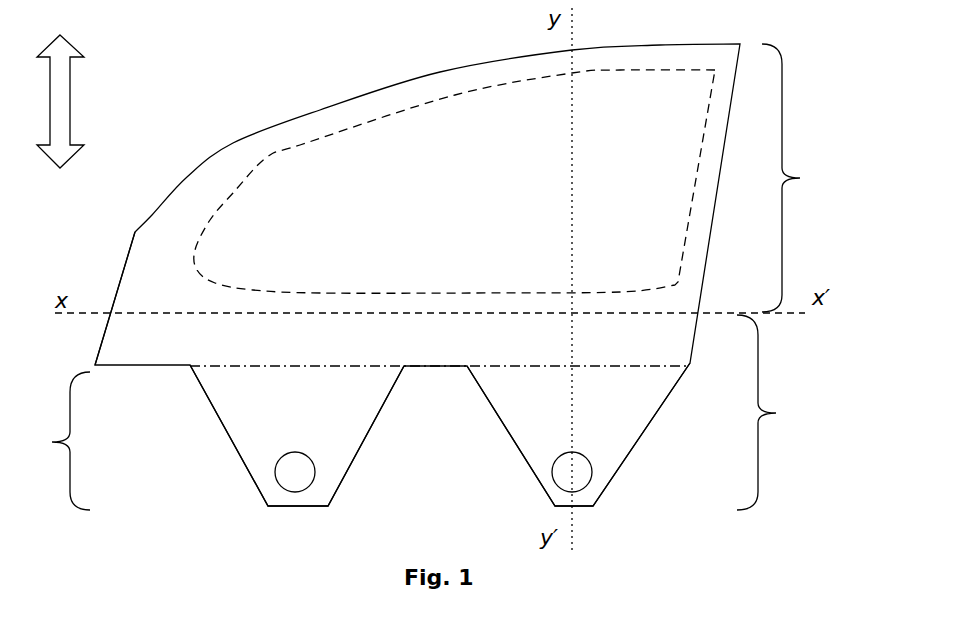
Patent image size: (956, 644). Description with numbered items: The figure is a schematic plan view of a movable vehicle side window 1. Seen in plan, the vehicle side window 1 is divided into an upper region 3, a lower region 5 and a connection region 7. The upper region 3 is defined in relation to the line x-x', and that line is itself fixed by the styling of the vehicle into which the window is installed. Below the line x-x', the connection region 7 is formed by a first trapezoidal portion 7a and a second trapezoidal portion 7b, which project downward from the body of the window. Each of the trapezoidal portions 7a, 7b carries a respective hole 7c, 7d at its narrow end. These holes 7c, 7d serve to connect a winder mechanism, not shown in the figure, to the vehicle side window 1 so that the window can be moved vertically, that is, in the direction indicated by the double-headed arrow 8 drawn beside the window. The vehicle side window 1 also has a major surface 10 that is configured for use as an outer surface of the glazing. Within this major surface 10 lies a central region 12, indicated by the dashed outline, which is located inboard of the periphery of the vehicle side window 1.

The vehicle side window 1 is at (244, 80).
The upper region 3 is at (791, 178).
The lower region 5 is at (768, 412).
The connection region 7 is at (60, 441).
The first trapezoidal portion 7a is at (247, 413).
The second trapezoidal portion 7b is at (607, 443).
The hole 7c is at (285, 472).
The hole 7d is at (567, 477).
The arrow 8 is at (62, 105).
The major surface 10 is at (165, 250).
The central region 12 is at (452, 190).